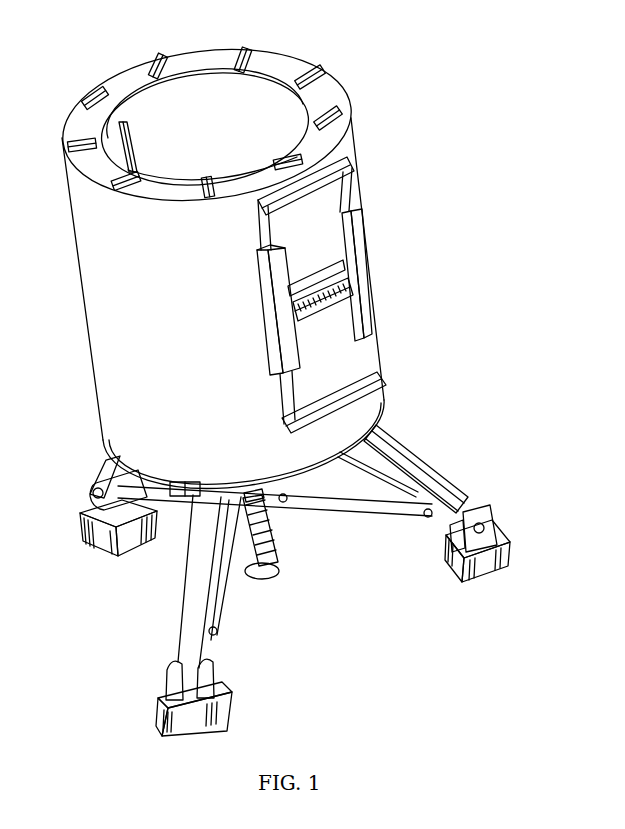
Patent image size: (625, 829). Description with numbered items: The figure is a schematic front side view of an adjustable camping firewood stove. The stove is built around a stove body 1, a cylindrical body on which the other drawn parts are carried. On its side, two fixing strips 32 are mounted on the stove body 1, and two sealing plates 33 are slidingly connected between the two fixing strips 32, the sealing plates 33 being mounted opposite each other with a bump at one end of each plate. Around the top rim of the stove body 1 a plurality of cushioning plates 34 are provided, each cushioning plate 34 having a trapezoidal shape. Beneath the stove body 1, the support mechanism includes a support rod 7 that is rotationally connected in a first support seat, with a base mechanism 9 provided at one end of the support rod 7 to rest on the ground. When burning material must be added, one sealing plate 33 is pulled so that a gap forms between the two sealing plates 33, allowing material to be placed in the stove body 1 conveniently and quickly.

The stove body 1 is at (80, 254).
The support rod 7 is at (413, 458).
The base mechanism 9 is at (503, 543).
The fixing strip 32 is at (356, 260).
The sealing plate 33 is at (344, 193).
The cushioning plate 34 is at (326, 71).